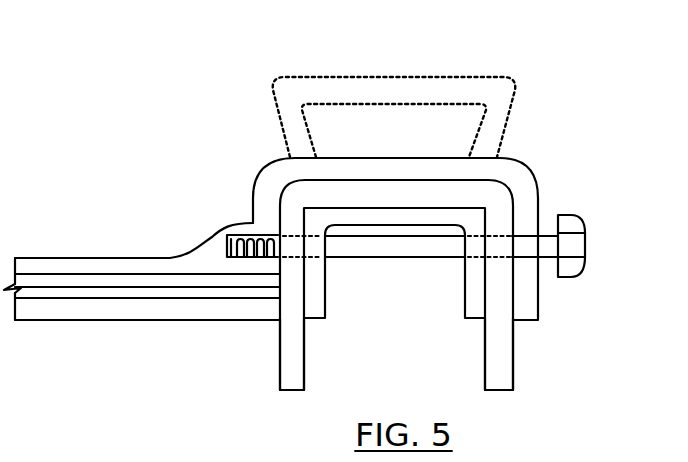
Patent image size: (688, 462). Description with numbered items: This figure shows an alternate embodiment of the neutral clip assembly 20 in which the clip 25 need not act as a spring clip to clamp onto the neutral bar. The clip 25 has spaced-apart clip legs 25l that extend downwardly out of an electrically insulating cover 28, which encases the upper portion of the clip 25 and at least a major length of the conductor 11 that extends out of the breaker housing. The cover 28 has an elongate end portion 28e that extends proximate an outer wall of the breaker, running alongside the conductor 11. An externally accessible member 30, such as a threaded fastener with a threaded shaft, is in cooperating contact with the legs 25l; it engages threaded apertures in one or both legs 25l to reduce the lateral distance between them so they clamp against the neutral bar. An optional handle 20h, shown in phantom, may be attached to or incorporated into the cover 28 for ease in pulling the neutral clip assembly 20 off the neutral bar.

The conductor 11 is at (100, 292).
The neutral clip assembly 20 is at (394, 134).
The handle 20h is at (317, 88).
The clip 25 is at (546, 186).
The clip legs 25l is at (297, 347).
The electrically insulating cover 28 is at (508, 172).
The elongate end portion 28e is at (80, 258).
The externally accessible member 30 is at (573, 247).